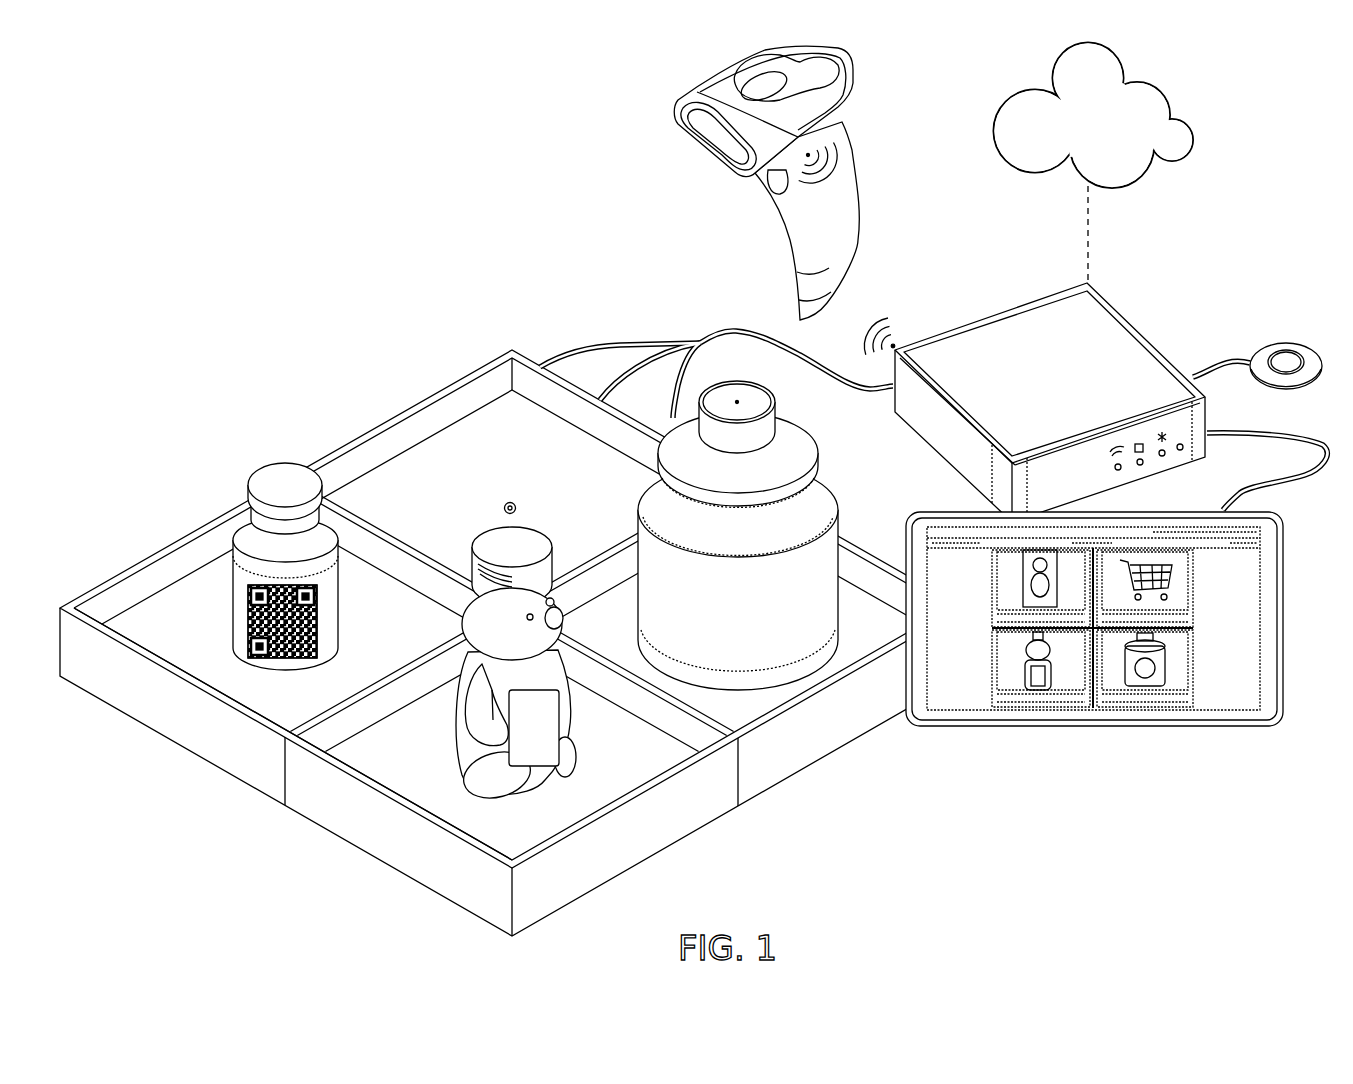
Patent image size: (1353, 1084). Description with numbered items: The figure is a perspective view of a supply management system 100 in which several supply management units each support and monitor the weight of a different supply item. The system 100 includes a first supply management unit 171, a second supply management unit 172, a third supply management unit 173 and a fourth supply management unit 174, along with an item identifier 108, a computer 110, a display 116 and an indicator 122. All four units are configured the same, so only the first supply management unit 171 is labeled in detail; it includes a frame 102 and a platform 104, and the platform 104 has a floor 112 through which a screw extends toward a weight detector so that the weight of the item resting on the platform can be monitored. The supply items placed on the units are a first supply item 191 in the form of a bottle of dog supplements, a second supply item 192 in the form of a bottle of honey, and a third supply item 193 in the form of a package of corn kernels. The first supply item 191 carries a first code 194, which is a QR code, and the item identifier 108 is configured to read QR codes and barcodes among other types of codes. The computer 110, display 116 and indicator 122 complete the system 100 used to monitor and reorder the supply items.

The system 100 is at (392, 238).
The frame 102 is at (212, 751).
The platform 104 is at (369, 645).
The item identifier 108 is at (848, 228).
The computer 110 is at (1127, 340).
The floor 112 is at (361, 617).
The display 116 is at (1250, 715).
The indicator 122 is at (1285, 352).
The first supply management unit 171 is at (156, 753).
The second supply management unit 172 is at (396, 890).
The third supply management unit 173 is at (810, 798).
The fourth supply management unit 174 is at (396, 398).
The first supply item 191 is at (252, 583).
The second supply item 192 is at (462, 745).
The third supply item 193 is at (650, 612).
The first code 194 is at (258, 652).